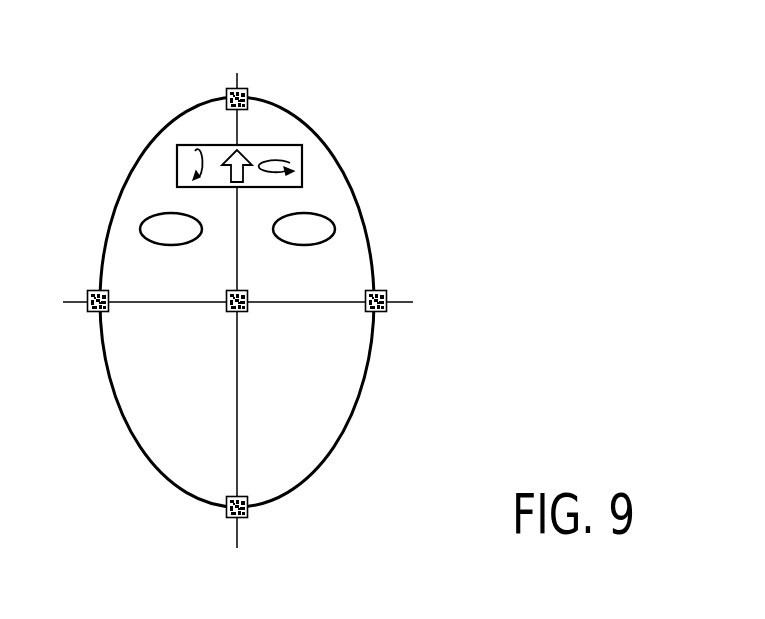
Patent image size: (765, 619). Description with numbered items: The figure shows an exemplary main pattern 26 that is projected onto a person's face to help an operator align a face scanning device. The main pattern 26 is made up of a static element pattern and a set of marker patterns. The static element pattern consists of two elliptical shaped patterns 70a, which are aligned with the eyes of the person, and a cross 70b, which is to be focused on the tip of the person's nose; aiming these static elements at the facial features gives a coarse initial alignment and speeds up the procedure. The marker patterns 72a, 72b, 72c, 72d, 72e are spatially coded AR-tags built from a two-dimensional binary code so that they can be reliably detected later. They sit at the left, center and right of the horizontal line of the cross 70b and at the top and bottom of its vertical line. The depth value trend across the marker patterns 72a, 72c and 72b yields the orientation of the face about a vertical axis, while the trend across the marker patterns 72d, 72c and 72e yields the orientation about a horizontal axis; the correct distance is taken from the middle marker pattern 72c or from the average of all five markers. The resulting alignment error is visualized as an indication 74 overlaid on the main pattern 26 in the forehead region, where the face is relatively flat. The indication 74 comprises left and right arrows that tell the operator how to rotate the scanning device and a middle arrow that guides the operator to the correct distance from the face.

The main pattern 26 is at (430, 178).
The elliptical shaped patterns 70a is at (139, 229).
The cross 70b is at (237, 338).
The marker pattern 72a is at (93, 313).
The marker pattern 72b is at (382, 312).
The middle marker pattern 72c is at (240, 312).
The marker pattern 72d is at (243, 89).
The marker pattern 72e is at (243, 518).
The indication 74 is at (304, 164).